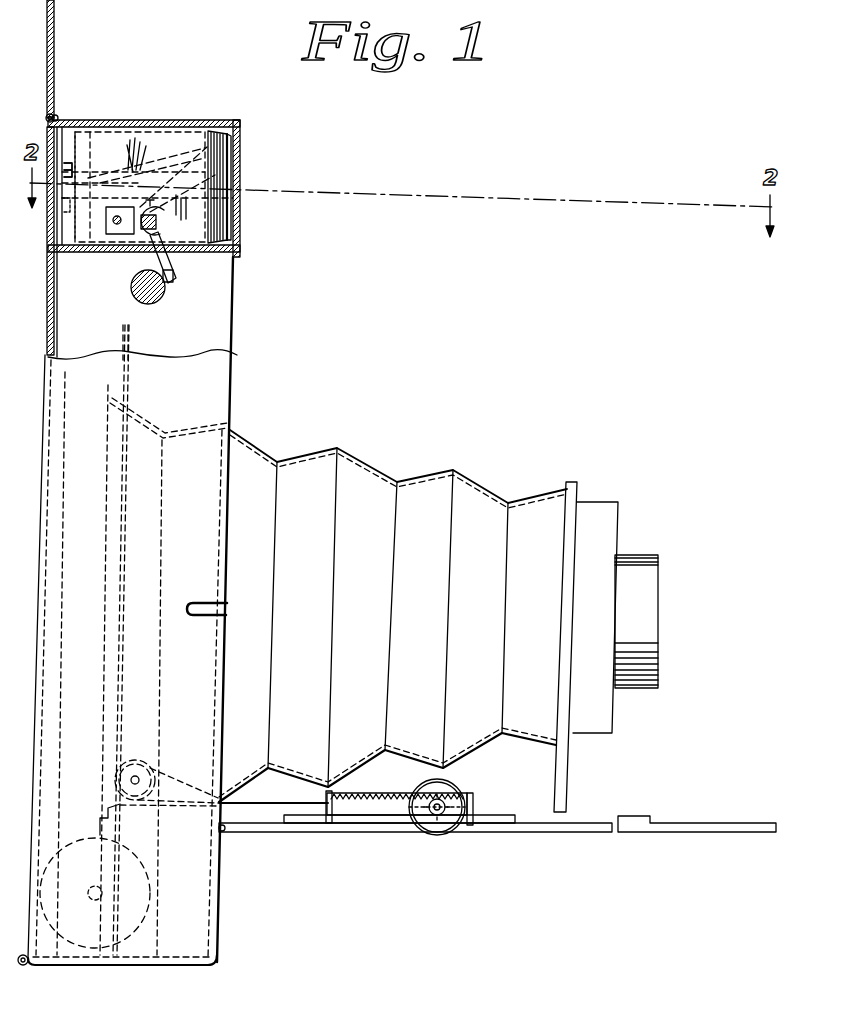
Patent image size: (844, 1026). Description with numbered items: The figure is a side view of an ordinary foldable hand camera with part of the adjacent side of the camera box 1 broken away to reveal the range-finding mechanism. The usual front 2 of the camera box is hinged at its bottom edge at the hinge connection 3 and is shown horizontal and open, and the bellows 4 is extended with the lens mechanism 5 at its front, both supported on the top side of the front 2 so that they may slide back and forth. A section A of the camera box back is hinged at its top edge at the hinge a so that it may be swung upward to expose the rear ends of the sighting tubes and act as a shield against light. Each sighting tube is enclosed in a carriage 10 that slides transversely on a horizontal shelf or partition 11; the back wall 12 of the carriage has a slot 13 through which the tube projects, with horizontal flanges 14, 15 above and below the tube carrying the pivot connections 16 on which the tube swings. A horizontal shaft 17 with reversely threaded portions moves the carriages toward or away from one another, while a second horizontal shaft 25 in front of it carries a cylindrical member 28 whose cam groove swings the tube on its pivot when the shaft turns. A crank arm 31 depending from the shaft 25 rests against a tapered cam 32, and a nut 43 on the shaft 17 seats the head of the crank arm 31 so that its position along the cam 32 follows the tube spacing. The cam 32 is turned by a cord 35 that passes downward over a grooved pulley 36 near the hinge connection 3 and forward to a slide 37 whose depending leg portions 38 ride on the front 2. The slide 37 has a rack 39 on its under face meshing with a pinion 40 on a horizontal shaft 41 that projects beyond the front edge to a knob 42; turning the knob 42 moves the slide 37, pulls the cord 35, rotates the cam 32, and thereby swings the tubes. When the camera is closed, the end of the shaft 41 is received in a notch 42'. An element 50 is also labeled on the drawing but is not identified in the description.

The section of the camera box back A is at (53, 26).
The hinge a is at (58, 114).
The camera box 1 is at (172, 953).
The front of the camera box 2 is at (712, 838).
The hinge connection 3 is at (225, 832).
The bellows 4 is at (352, 470).
The lens mechanism 5 is at (634, 568).
The carriage 10 is at (190, 148).
The horizontal shelf or partition 11 is at (238, 260).
The back wall of carriage 12 is at (124, 152).
The slot or opening 13 is at (145, 155).
The horizontal flange 14 is at (82, 146).
The horizontal flange 15 is at (112, 229).
The pivot connections 16 is at (66, 216).
The horizontal shaft 17 is at (143, 228).
The horizontal shaft 25 is at (148, 224).
The cylindrical member 28 is at (230, 217).
The crank arm 31 is at (177, 277).
The cam 32 is at (166, 298).
The cord 35 is at (121, 340).
The grooved pulley 36 is at (135, 762).
The slide 37 is at (462, 797).
The depending leg portions 38 is at (320, 813).
The rack 39 is at (380, 797).
The gear or pinion 40 is at (410, 825).
The horizontal shaft 41 is at (438, 814).
The knob or finger piece 42 is at (435, 856).
The notch 42' is at (203, 593).
The nut 43 is at (168, 206).
The finder lens 50 is at (226, 166).